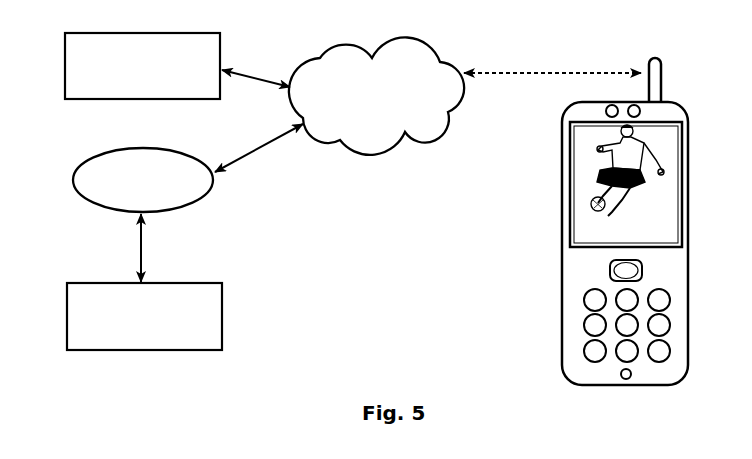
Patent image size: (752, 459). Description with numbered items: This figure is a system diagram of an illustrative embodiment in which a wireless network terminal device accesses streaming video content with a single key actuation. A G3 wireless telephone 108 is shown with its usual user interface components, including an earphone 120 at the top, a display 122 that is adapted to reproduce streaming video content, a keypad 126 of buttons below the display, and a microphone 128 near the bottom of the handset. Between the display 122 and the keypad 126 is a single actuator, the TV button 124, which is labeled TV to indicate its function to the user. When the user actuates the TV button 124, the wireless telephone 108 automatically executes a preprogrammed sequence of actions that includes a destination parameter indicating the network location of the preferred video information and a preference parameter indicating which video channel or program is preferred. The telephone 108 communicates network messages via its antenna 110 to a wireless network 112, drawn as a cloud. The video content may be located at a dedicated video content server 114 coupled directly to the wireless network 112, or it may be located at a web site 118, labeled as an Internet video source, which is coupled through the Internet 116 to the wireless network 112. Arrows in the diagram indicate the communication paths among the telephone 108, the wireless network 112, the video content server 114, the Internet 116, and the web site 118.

The G3 wireless telephone 108 is at (688, 240).
The antenna 110 is at (661, 62).
The wireless network 112 is at (322, 57).
The video content server 114 is at (65, 45).
The Internet 116 is at (73, 180).
The web site 118 is at (67, 296).
The earphone 120 is at (606, 107).
The display 122 is at (570, 177).
The TV button 124 is at (610, 270).
The keypad 126 is at (583, 367).
The microphone 128 is at (624, 380).